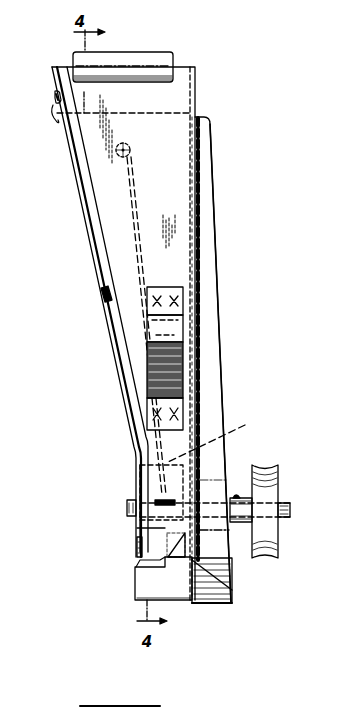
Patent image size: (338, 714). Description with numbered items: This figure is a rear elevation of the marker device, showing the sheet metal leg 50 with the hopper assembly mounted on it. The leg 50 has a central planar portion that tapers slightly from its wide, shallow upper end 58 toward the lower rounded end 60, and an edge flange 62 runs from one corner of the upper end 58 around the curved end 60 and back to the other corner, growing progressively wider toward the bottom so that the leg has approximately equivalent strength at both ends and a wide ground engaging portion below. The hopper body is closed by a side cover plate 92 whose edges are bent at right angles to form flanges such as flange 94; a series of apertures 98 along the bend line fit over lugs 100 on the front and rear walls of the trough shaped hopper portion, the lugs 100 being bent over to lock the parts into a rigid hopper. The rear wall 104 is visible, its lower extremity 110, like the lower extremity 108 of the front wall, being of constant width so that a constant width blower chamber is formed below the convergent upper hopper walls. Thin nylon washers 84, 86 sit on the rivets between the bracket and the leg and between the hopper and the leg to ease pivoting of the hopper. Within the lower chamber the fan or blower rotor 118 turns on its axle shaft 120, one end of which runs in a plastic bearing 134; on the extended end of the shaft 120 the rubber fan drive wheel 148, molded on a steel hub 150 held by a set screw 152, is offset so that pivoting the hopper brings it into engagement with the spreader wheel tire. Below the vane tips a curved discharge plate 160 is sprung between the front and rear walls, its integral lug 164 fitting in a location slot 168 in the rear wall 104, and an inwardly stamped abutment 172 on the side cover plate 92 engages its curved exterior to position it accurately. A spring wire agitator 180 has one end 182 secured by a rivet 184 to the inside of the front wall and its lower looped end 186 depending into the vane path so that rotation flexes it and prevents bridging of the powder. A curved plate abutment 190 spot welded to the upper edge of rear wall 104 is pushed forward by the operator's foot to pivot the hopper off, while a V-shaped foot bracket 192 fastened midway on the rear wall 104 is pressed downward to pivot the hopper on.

The leg 50 is at (222, 375).
The upper end 58 is at (200, 117).
The lower rounded end 60 is at (217, 605).
The edge flange 62 is at (210, 401).
The washer 84 is at (197, 213).
The washer 86 is at (196, 345).
The side cover plate 92 is at (75, 201).
The flange 94 is at (98, 236).
The apertures 98 is at (55, 96).
The lugs 100 is at (54, 120).
The rear wall 104 is at (182, 168).
The lower extremity of front wall 108 is at (180, 594).
The lower extremity of rear wall 110 is at (145, 541).
The fan or blower rotor 118 is at (134, 574).
The axle shaft 120 is at (129, 510).
The bearing 134 is at (163, 530).
The fan drive wheel 148 is at (271, 495).
The steel hub 150 is at (247, 522).
The set screw 152 is at (238, 495).
The discharge plate 160 is at (163, 578).
The lug 164 is at (155, 502).
The location slot 168 is at (160, 497).
The abutment 172 is at (232, 590).
The agitator 180 is at (140, 230).
The end of agitator 182 is at (131, 153).
The rivet 184 is at (130, 143).
The lower looped end 186 is at (225, 438).
The curved plate abutment 190 is at (138, 58).
The foot bracket 192 is at (178, 308).